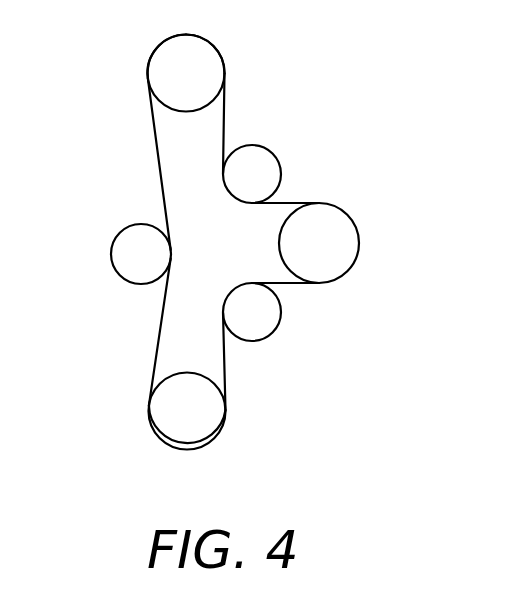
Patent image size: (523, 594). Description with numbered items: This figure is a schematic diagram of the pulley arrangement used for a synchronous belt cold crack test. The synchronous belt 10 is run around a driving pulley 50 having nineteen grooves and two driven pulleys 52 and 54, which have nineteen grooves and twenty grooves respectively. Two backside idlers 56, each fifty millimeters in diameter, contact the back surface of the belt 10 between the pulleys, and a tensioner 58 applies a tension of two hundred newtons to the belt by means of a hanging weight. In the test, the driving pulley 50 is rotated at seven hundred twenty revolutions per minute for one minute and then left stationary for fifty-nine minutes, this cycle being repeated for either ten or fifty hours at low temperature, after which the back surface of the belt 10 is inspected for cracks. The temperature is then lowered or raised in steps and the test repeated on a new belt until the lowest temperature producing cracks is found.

The power transmission belt 10 is at (244, 109).
The driving pulley 50 is at (195, 424).
The driven pulley 52 is at (202, 72).
The driven pulley 54 is at (328, 248).
The backside idlers 56 is at (267, 173).
The tensioner 58 is at (128, 270).